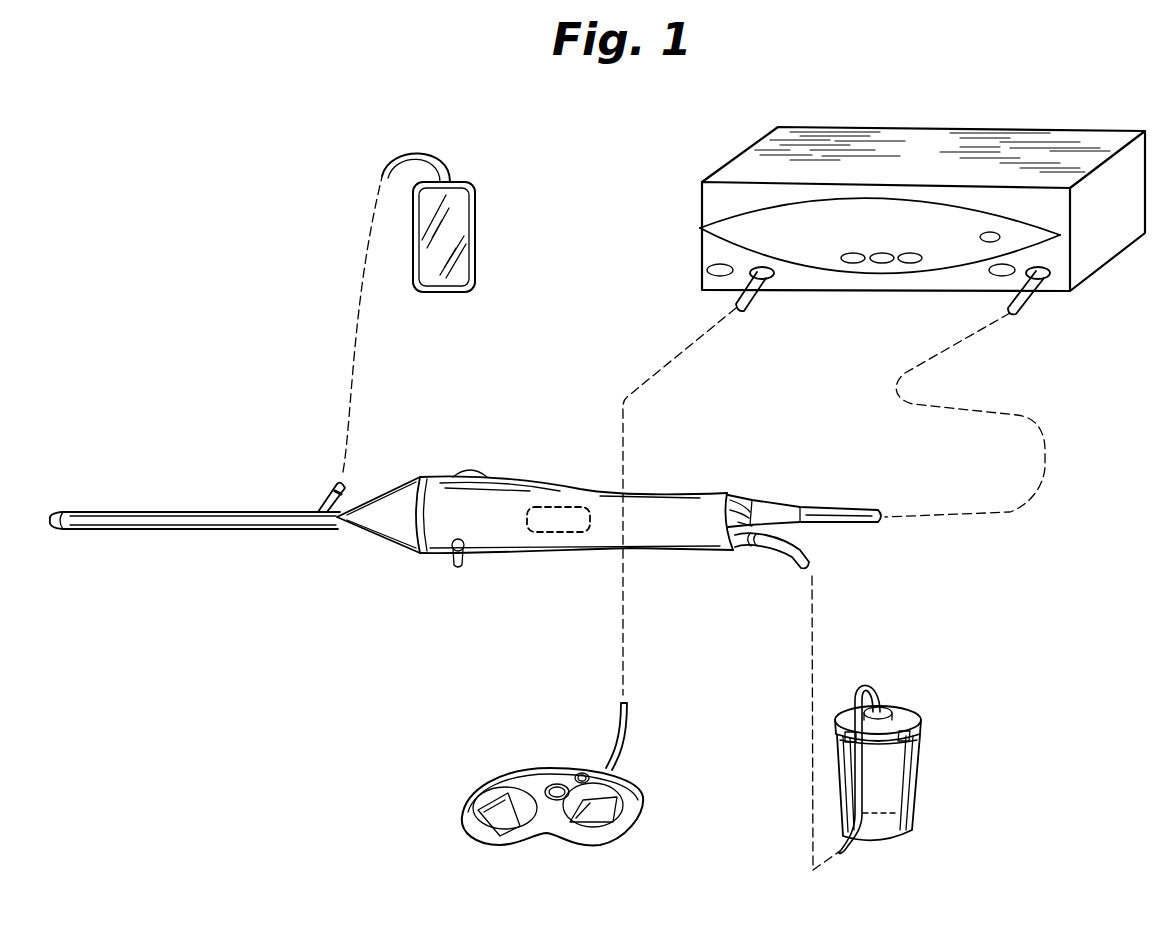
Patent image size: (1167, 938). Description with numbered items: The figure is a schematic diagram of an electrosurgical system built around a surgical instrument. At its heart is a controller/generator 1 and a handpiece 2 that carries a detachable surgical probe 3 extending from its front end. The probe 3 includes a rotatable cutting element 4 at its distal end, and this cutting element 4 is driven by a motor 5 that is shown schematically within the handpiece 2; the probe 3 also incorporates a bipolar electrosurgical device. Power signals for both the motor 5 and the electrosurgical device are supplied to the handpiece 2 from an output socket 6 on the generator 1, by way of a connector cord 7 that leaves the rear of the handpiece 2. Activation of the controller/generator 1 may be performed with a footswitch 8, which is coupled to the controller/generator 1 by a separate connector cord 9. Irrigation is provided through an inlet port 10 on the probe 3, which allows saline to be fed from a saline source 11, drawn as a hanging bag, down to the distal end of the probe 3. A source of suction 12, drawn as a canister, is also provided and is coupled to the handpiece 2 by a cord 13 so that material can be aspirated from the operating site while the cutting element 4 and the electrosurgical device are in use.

The controller/generator 1 is at (930, 140).
The handpiece 2 is at (512, 477).
The surgical probe 3 is at (157, 510).
The rotatable cutting element 4 is at (57, 512).
The motor 5 is at (555, 532).
The output socket 6 is at (1043, 287).
The connector cord 7 is at (857, 517).
The footswitch 8 is at (537, 777).
The connector cord 9 is at (746, 304).
The inlet port 10 is at (327, 493).
The saline source 11 is at (460, 240).
The source of suction 12 is at (918, 767).
The cord 13 is at (800, 560).